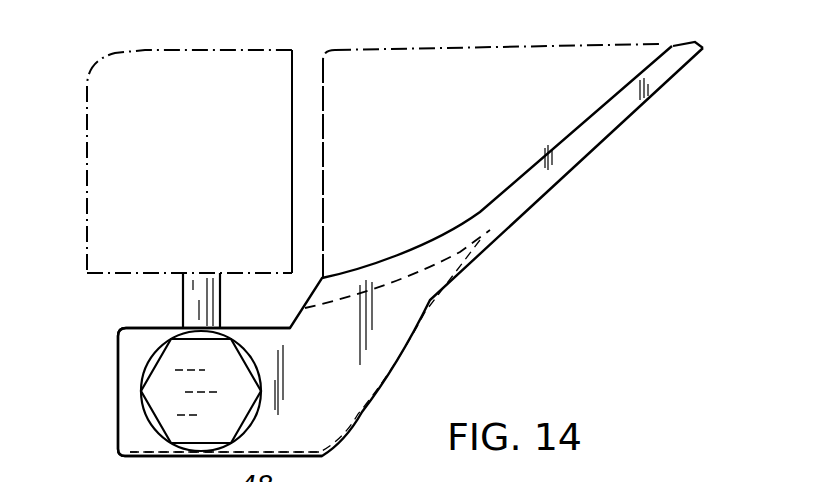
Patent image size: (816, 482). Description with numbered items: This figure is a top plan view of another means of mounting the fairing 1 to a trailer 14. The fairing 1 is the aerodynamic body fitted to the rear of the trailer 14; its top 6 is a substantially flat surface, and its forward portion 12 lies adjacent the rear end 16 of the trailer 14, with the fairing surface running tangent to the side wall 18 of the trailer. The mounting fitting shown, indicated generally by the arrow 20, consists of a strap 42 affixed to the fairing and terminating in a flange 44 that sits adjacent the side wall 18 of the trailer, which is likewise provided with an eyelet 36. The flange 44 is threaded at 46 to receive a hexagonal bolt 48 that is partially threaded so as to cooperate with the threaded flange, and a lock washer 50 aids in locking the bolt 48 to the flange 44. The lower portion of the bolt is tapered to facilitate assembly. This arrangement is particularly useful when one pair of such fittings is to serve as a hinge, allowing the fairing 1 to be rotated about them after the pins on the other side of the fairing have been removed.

The fairing 1 is at (655, 42).
The top 6 is at (455, 167).
The forward portion 12 is at (318, 62).
The trailer 14 is at (205, 172).
The rear end 16 is at (300, 62).
The side wall 18 is at (125, 274).
The attachment assembly 20 is at (405, 362).
The eyelet 36 is at (190, 298).
The strap 42 is at (565, 172).
The flange 44 is at (125, 437).
The threaded portion 46 is at (225, 467).
The hexagonal bolt 48 is at (167, 383).
The lock washer 50 is at (150, 366).